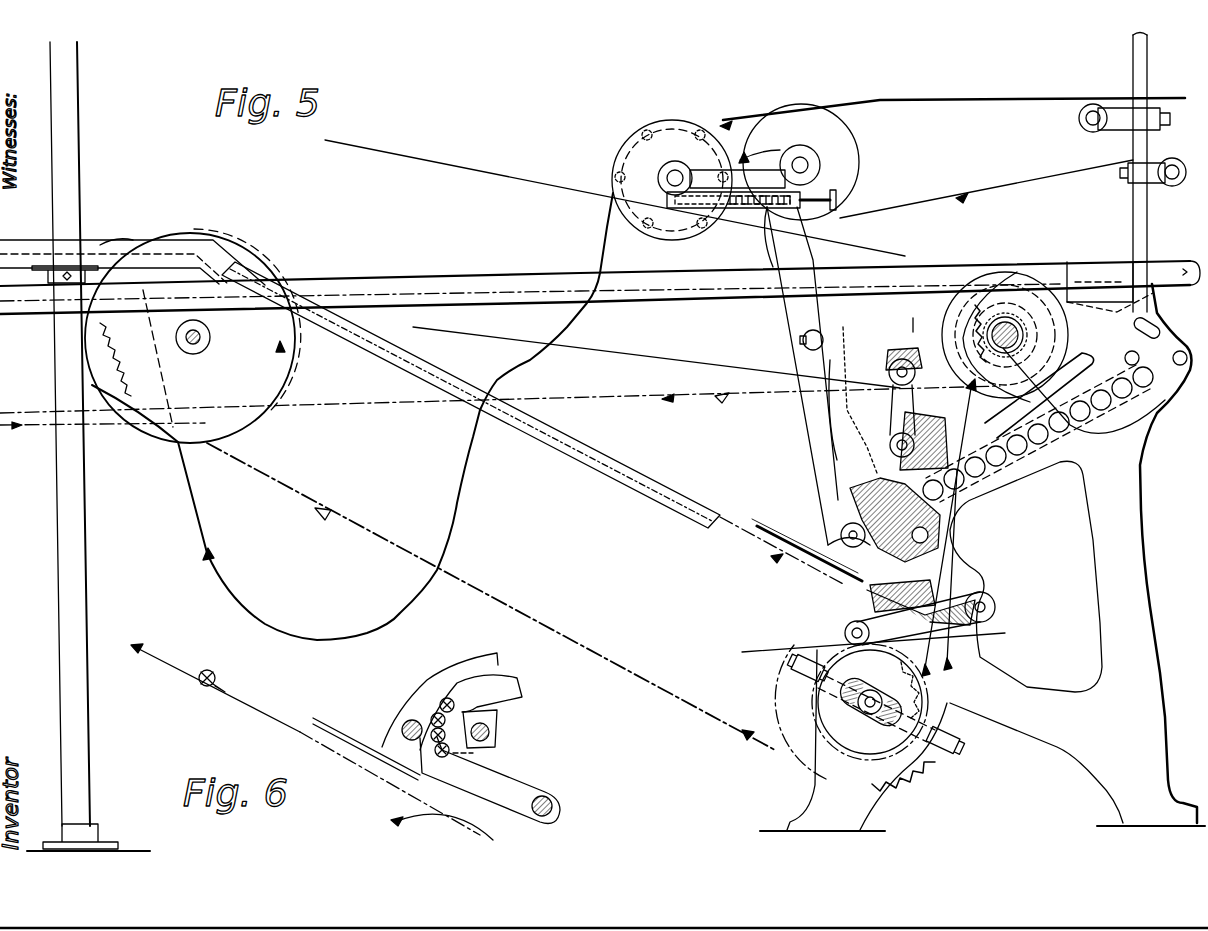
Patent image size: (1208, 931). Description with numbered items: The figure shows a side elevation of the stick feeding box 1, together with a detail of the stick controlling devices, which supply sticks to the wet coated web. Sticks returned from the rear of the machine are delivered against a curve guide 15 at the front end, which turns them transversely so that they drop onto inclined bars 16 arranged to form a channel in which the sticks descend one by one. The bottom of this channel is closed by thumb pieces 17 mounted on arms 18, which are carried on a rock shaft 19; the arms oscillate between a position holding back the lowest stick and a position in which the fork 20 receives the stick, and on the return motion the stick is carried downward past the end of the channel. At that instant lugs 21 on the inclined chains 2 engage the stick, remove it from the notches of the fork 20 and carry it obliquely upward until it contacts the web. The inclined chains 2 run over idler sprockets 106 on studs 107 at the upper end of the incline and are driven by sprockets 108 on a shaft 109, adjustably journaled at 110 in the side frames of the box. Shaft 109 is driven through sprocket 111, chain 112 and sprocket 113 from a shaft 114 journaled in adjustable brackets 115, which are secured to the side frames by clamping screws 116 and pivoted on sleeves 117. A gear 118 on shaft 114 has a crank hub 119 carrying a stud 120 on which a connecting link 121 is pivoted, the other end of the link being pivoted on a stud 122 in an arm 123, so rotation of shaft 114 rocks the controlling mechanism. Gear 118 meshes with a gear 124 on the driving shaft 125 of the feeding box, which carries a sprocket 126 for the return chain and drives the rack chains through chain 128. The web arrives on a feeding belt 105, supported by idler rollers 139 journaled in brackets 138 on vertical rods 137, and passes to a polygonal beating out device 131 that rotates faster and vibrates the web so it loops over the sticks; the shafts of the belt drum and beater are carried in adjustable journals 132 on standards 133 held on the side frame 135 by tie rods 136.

In FIG. 5, the stick feeding box 1 is at (982, 557).
In FIG. 5, the inclined chains 2 is at (520, 610).
In FIG. 6, the inclined chains 2 is at (266, 712).
In FIG. 5, the curve guide 15 is at (1120, 261).
In FIG. 5, the inclined bars 16 is at (867, 493).
In FIG. 6, the inclined bars 16 is at (498, 662).
In FIG. 5, the thumb pieces 17 is at (812, 585).
In FIG. 6, the thumb pieces 17 is at (477, 713).
In FIG. 5, the arms 18 is at (915, 580).
In FIG. 6, the arms 18 is at (483, 767).
In FIG. 5, the rock shaft 19 is at (983, 604).
In FIG. 6, the rock shaft 19 is at (555, 802).
In FIG. 6, the fork 20 is at (527, 782).
In FIG. 5, the lugs 21 is at (845, 634).
In FIG. 6, the lugs 21 is at (226, 680).
In FIG. 5, the feeding belt 105 is at (937, 193).
In FIG. 5, the idler sprockets 106 is at (250, 402).
In FIG. 5, the studs 107 is at (214, 337).
In FIG. 5, the sprockets 108 is at (793, 677).
In FIG. 6, the sprockets 108 is at (372, 835).
In FIG. 5, the shaft 109 is at (862, 708).
In FIG. 5, the adjustable journal 110 is at (870, 712).
In FIG. 5, the sprocket 111 is at (927, 700).
In FIG. 5, the chain 112 is at (990, 636).
In FIG. 5, the sprocket 113 is at (893, 270).
In FIG. 5, the shaft 114 is at (907, 350).
In FIG. 5, the adjustable brackets 115 is at (920, 423).
In FIG. 5, the clamping screws 116 is at (890, 445).
In FIG. 5, the sleeves 117 is at (1047, 283).
In FIG. 5, the gear 118 is at (947, 300).
In FIG. 5, the crank hub 119 is at (918, 314).
In FIG. 5, the stud 120 is at (893, 377).
In FIG. 5, the connecting link 121 is at (893, 437).
In FIG. 5, the stud 122 is at (833, 632).
In FIG. 5, the arm 123 is at (996, 607).
In FIG. 5, the gear 124 is at (1033, 385).
In FIG. 5, the driving shaft 125 is at (1055, 427).
In FIG. 5, the sprocket 126 is at (1003, 322).
In FIG. 5, the chain 128 is at (503, 183).
In FIG. 5, the beating out device 131 is at (638, 132).
In FIG. 5, the adjustable journals 132 is at (780, 160).
In FIG. 5, the standards 133 is at (780, 245).
In FIG. 5, the side frame 135 is at (1044, 576).
In FIG. 5, the tie rods 136 is at (803, 340).
In FIG. 5, the vertical rods 137 is at (1145, 32).
In FIG. 5, the brackets 138 is at (1134, 146).
In FIG. 5, the idler rollers 139 is at (1079, 120).